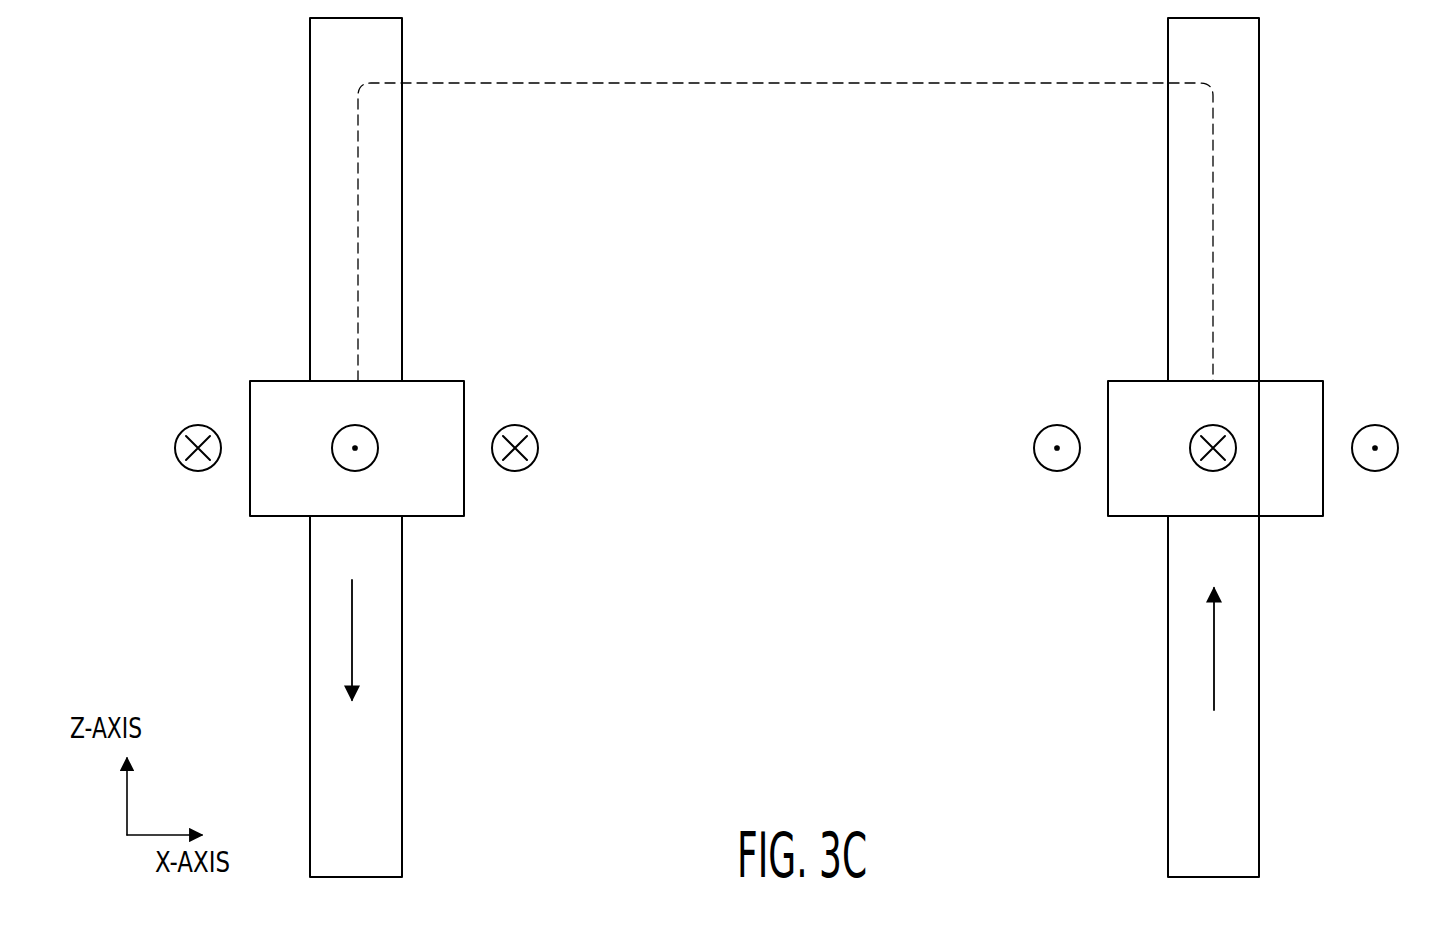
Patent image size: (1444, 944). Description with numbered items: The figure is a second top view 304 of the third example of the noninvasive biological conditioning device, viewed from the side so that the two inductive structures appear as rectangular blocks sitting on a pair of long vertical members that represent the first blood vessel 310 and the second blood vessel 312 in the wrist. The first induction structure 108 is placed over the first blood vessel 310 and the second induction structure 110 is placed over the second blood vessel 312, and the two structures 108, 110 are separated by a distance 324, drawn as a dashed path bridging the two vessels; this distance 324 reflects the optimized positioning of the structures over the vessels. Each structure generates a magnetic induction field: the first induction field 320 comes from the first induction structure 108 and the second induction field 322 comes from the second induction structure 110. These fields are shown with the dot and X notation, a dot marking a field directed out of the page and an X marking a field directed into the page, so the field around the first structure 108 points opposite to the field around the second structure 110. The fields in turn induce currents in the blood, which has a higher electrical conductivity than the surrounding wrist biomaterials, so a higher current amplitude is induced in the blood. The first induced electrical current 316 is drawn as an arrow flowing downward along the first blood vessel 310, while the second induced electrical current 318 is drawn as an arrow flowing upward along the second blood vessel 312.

The second top view 304 is at (180, 106).
The first blood vessel 310 is at (402, 190).
The second blood vessel 312 is at (1168, 178).
The first induced electrical current 316 is at (354, 626).
The second induced electrical current 318 is at (1212, 662).
The first induction field 320 is at (197, 426).
The second induction field 322 is at (1056, 426).
The distance 324 is at (778, 83).
The first induction structure 108 is at (306, 498).
The second induction structure 110 is at (1165, 498).